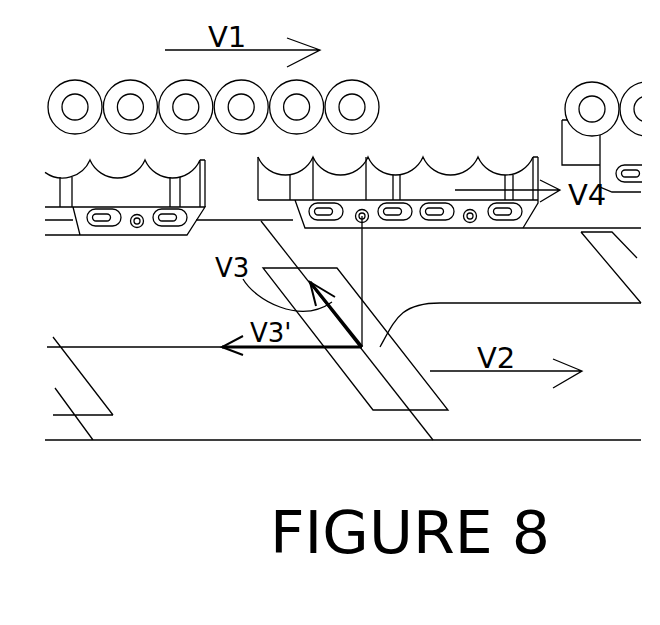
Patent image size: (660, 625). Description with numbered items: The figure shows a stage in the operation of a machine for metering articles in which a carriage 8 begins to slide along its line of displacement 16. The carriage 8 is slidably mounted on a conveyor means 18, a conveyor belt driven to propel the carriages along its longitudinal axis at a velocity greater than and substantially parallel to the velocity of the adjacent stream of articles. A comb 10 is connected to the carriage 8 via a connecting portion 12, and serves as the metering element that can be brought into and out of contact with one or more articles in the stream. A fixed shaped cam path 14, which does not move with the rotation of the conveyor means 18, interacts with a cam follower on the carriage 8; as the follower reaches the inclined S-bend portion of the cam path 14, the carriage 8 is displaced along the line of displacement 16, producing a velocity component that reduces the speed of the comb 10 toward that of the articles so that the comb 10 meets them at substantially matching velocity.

The carriage 8 is at (368, 327).
The comb 10 is at (415, 180).
The connecting portion 12 is at (363, 288).
The shaped cam path 14 is at (471, 300).
The line of displacement 16 is at (433, 438).
The conveyor means 18 is at (233, 423).